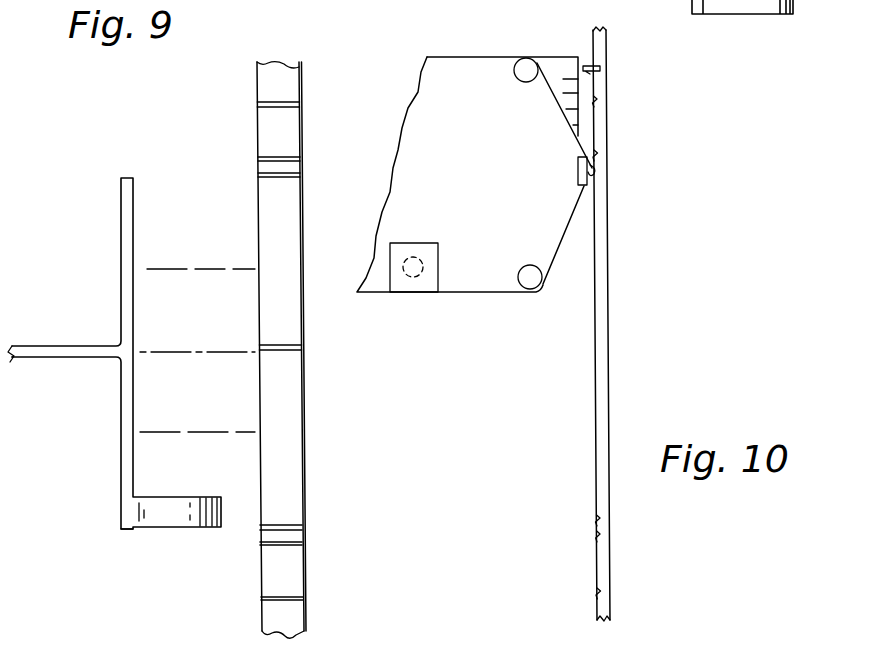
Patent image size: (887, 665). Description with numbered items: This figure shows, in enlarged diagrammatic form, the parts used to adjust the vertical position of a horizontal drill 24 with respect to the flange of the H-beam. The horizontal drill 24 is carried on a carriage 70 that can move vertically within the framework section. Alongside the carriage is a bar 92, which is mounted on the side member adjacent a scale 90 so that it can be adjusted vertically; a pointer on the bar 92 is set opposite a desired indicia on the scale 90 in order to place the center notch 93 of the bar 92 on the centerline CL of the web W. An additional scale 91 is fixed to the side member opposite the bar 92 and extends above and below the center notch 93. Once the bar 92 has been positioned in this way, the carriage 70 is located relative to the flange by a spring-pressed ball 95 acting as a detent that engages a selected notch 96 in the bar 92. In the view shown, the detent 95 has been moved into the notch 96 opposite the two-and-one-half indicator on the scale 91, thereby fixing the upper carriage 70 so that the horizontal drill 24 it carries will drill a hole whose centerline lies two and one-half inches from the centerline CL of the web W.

In FIG. 10, the horizontal drill 24 is at (415, 254).
In FIG. 10, the carriage 70 is at (487, 293).
In FIG. 10, the scale 90 is at (578, 60).
In FIG. 9, the additional scale 91 is at (320, 88).
In FIG. 9, the bar 92 is at (304, 453).
In FIG. 10, the bar 92 is at (597, 445).
In FIG. 9, the center notch 93 is at (284, 351).
In FIG. 10, the spring-pressed ball 95 is at (596, 172).
In FIG. 9, the notch 96 is at (273, 180).
In FIG. 9, the web W is at (47, 345).
In FIG. 9, the centerline CL is at (190, 351).